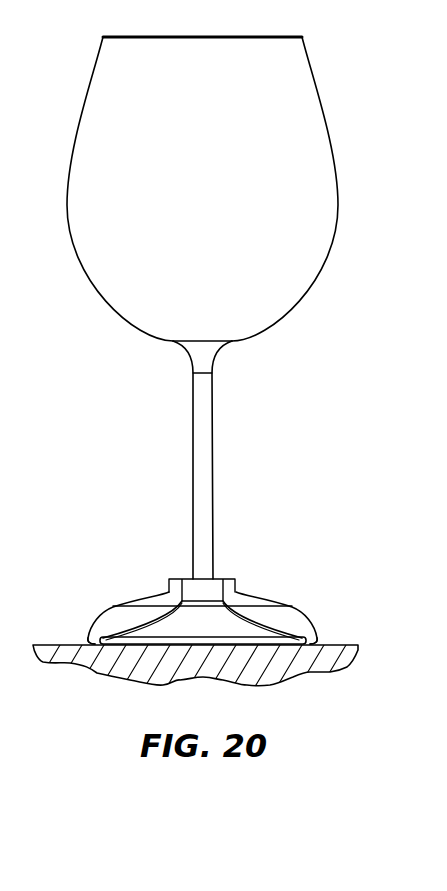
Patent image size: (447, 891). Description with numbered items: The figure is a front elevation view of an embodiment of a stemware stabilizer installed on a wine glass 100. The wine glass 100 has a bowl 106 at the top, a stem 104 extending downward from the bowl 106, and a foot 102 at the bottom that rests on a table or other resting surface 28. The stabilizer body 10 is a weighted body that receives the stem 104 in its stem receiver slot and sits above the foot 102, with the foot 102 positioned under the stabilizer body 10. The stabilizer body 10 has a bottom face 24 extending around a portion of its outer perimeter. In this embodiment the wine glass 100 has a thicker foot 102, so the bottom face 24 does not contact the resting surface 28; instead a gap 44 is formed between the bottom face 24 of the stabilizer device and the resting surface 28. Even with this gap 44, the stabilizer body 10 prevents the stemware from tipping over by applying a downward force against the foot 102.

The wine glass 100 is at (203, 319).
The bowl 106 is at (315, 80).
The stem 104 is at (213, 472).
The stabilizer body 10 is at (205, 631).
The bottom face 24 is at (86, 641).
The gap 44 is at (323, 642).
The foot 102 is at (293, 643).
The resting surface 28 is at (358, 646).